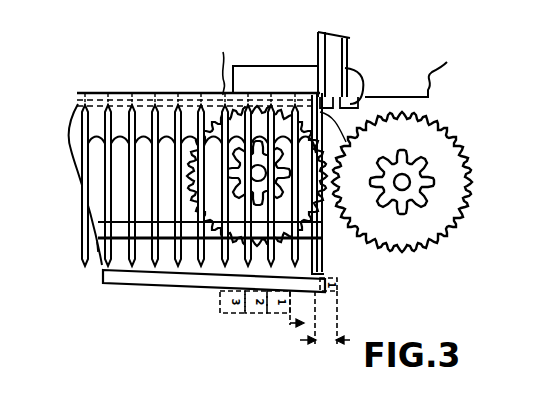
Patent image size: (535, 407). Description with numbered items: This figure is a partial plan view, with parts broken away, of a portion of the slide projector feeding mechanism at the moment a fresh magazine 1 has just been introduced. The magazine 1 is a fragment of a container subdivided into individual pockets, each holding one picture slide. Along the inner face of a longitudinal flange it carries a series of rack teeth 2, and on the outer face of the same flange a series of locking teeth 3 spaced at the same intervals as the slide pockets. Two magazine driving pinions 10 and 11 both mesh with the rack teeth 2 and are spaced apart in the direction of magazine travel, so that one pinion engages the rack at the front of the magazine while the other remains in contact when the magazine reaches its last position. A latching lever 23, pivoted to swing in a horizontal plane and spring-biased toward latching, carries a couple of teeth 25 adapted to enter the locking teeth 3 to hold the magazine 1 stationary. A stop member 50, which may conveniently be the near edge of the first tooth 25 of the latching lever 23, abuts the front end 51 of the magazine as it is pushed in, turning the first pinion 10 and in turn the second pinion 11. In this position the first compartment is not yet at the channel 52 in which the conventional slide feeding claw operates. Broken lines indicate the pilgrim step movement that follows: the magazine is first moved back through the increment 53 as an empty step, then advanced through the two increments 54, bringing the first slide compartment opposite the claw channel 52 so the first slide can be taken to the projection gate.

The magazine 1 is at (182, 280).
The rack teeth 2 is at (87, 140).
The locking teeth 3 is at (163, 92).
The magazine driving pinion 10 is at (296, 207).
The magazine driving pinion 11 is at (400, 210).
The latching lever 23 is at (268, 78).
The teeth of latching lever 25 is at (365, 92).
The stop member 50 is at (338, 147).
The front end of magazine 51 is at (320, 247).
The channel 52 is at (348, 50).
The backward increment 53 is at (300, 324).
The forward increments 54 is at (317, 343).